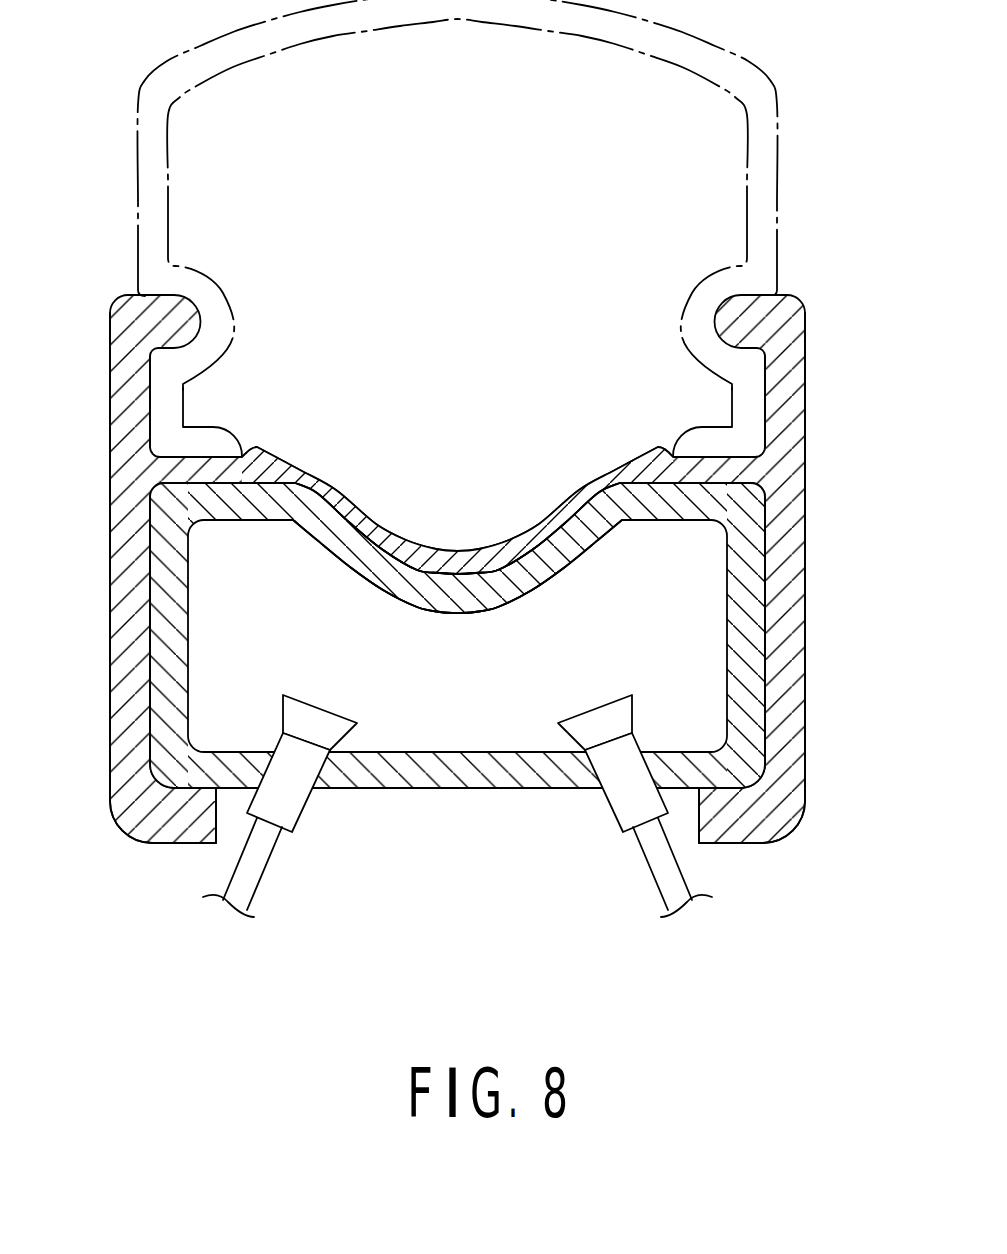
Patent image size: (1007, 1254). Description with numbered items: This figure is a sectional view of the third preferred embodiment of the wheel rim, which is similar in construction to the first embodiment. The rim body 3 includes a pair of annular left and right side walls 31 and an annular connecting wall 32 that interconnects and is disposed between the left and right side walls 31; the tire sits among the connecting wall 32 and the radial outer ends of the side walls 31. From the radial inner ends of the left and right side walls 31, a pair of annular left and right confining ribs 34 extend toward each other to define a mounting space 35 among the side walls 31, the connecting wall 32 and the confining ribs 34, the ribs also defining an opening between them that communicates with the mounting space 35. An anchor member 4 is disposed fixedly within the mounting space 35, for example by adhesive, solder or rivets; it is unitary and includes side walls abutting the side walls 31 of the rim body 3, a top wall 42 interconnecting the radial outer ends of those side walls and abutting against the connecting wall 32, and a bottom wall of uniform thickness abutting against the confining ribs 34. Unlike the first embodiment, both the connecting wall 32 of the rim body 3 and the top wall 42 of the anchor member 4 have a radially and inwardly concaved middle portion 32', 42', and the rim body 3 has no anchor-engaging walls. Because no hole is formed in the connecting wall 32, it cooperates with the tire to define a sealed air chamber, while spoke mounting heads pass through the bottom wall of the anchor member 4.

The rim body 3 is at (828, 470).
The left and right side walls 31 is at (130, 640).
The connecting wall 32 is at (457, 510).
The radially and inwardly concaved middle portion 32' is at (457, 689).
The left and right confining ribs 34 is at (170, 827).
The mounting space 35 is at (767, 687).
The anchor member 4 is at (541, 803).
The top wall 42 is at (457, 499).
The radially and inwardly concaved middle portion 42' is at (457, 712).